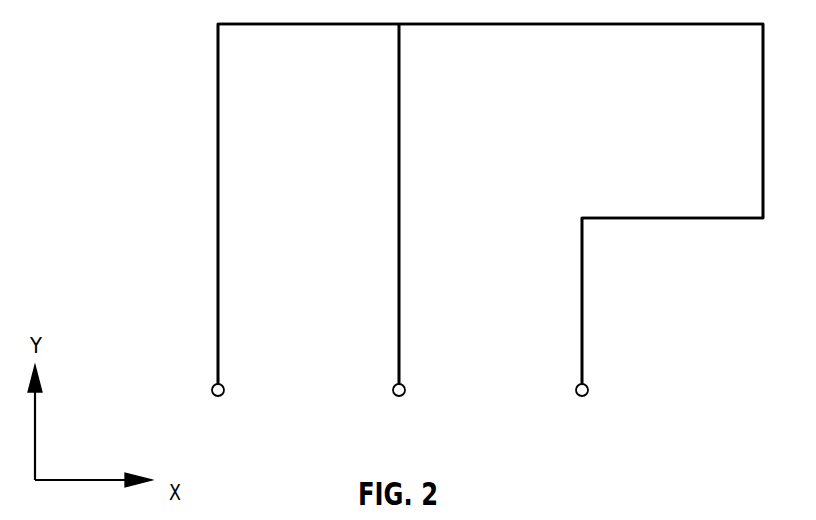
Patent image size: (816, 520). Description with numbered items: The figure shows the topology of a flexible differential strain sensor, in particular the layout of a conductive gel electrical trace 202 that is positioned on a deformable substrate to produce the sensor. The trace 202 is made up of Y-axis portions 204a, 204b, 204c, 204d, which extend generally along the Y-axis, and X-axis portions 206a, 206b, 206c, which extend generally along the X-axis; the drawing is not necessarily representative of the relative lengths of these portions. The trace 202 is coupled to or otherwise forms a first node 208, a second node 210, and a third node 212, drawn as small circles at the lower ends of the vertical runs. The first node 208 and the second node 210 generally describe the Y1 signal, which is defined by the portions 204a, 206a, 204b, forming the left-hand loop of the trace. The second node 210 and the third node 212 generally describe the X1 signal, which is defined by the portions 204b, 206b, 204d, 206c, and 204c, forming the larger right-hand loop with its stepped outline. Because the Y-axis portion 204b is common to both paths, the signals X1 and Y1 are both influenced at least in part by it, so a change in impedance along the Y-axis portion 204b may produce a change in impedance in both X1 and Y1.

The conductive gel electrical trace 202 is at (218, 212).
The Y-axis portion 204a is at (218, 102).
The Y-axis portion 204b is at (398, 168).
The Y-axis portion 204c is at (581, 290).
The Y-axis portion 204d is at (763, 115).
The X-axis portion 206a is at (293, 26).
The X-axis portion 206b is at (551, 26).
The X-axis portion 206c is at (645, 220).
The first node 208 is at (212, 388).
The second node 210 is at (393, 388).
The third node 212 is at (576, 388).